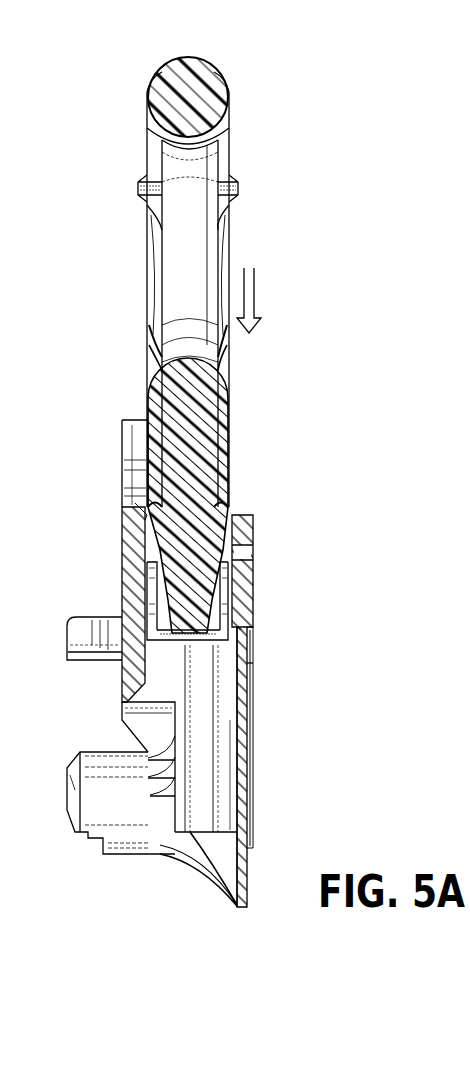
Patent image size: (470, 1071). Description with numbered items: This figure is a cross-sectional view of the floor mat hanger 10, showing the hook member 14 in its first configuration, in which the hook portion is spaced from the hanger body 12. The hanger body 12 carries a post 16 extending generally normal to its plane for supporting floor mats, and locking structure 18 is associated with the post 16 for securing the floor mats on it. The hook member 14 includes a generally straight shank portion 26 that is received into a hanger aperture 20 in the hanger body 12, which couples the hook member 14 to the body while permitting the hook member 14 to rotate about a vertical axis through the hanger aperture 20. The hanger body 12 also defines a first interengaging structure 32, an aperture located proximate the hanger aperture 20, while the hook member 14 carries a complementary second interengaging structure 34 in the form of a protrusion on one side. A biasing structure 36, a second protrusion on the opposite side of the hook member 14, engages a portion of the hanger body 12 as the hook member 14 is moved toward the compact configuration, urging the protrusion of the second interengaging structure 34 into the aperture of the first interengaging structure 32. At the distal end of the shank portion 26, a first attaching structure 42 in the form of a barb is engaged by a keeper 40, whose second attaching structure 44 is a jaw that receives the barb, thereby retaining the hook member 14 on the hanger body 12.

The floor mat hanger 10 is at (58, 93).
The hanger body 12 is at (256, 733).
The hook member 14 is at (215, 66).
The post 16 is at (118, 844).
The locking structure 18 is at (128, 420).
The hanger aperture 20 is at (157, 655).
The shank portion 26 is at (231, 433).
The first interengaging structure 32 is at (248, 543).
The second interengaging structure 34 is at (238, 189).
The biasing structure 36 is at (138, 189).
The keeper 40 is at (147, 588).
The first attaching structure 42 is at (205, 637).
The second attaching structure 44 is at (210, 598).